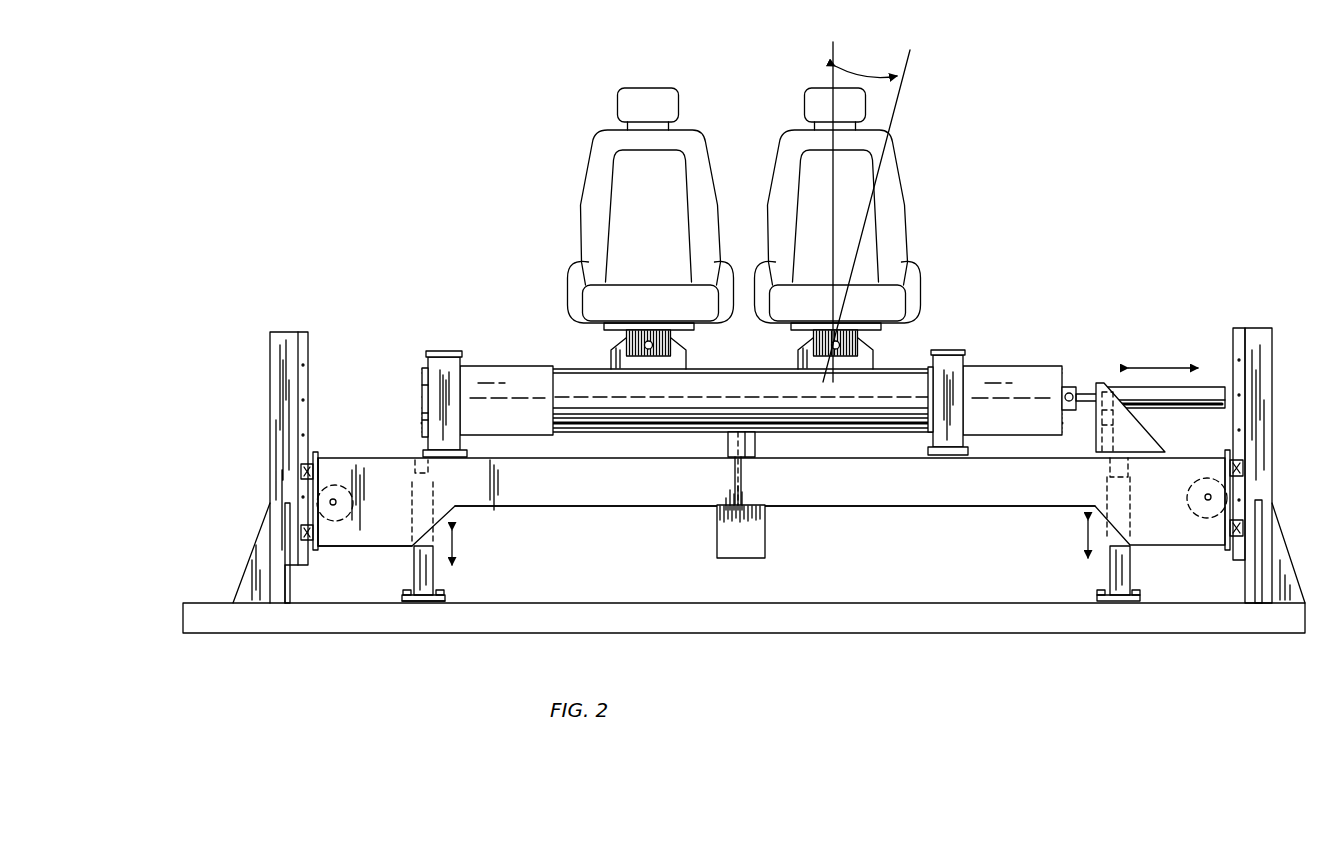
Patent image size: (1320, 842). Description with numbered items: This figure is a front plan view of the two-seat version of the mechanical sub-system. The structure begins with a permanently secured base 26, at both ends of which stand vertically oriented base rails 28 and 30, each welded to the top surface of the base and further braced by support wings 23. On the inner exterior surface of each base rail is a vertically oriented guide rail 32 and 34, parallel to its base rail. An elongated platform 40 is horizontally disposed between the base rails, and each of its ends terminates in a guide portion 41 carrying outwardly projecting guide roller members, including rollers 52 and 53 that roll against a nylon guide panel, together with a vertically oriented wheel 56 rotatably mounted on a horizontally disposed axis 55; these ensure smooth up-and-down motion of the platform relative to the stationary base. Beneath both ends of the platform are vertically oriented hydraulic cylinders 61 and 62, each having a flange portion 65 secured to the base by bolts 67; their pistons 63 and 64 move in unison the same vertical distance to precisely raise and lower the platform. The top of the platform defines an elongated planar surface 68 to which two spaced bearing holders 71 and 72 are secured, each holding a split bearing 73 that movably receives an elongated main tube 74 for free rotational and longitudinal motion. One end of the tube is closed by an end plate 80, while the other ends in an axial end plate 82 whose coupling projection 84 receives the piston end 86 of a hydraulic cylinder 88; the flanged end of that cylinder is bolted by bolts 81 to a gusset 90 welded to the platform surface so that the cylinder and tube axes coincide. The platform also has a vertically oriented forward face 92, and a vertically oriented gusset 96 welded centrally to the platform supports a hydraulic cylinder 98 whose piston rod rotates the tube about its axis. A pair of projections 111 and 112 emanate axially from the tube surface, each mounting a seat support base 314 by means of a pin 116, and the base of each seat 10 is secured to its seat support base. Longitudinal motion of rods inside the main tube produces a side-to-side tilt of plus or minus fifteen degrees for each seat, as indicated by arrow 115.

The seat 10 is at (707, 165).
The support wing 23 is at (253, 562).
The base 26 is at (870, 620).
The base rail 28 is at (273, 398).
The base rail 30 is at (1272, 345).
The guide rail 32 is at (308, 378).
The guide rail 34 is at (1238, 332).
The platform 40 is at (622, 493).
The guide portion 41 is at (328, 560).
The guide roller member 52 is at (303, 463).
The guide roller member 53 is at (303, 530).
The axis 55 is at (336, 505).
The wheel 56 is at (352, 485).
The hydraulic cylinder 61 is at (417, 567).
The hydraulic cylinder 62 is at (1107, 572).
The piston 63 is at (430, 478).
The piston 64 is at (1108, 470).
The flange portion 65 is at (422, 600).
The bolts 67 is at (443, 592).
The planar surface 68 is at (375, 458).
The bearing holder 71 is at (448, 350).
The bearing holder 72 is at (953, 350).
The split bearing 73 is at (498, 366).
The main tube 74 is at (758, 394).
The end plate 80 is at (422, 400).
The bolts 81 is at (1117, 422).
The axial end plate 82 is at (1067, 373).
The coupling projection 84 is at (1075, 388).
The piston end 86 is at (1088, 407).
The hydraulic cylinder 88 is at (1212, 395).
The gusset 90 is at (1145, 440).
The forward face 92 is at (822, 492).
The gusset 96 is at (737, 550).
The hydraulic cylinder 98 is at (755, 445).
The projection 111 is at (680, 362).
The projection 112 is at (867, 360).
The arrow 115 is at (883, 80).
The pin 116 is at (644, 344).
The seat support base 314 is at (613, 323).